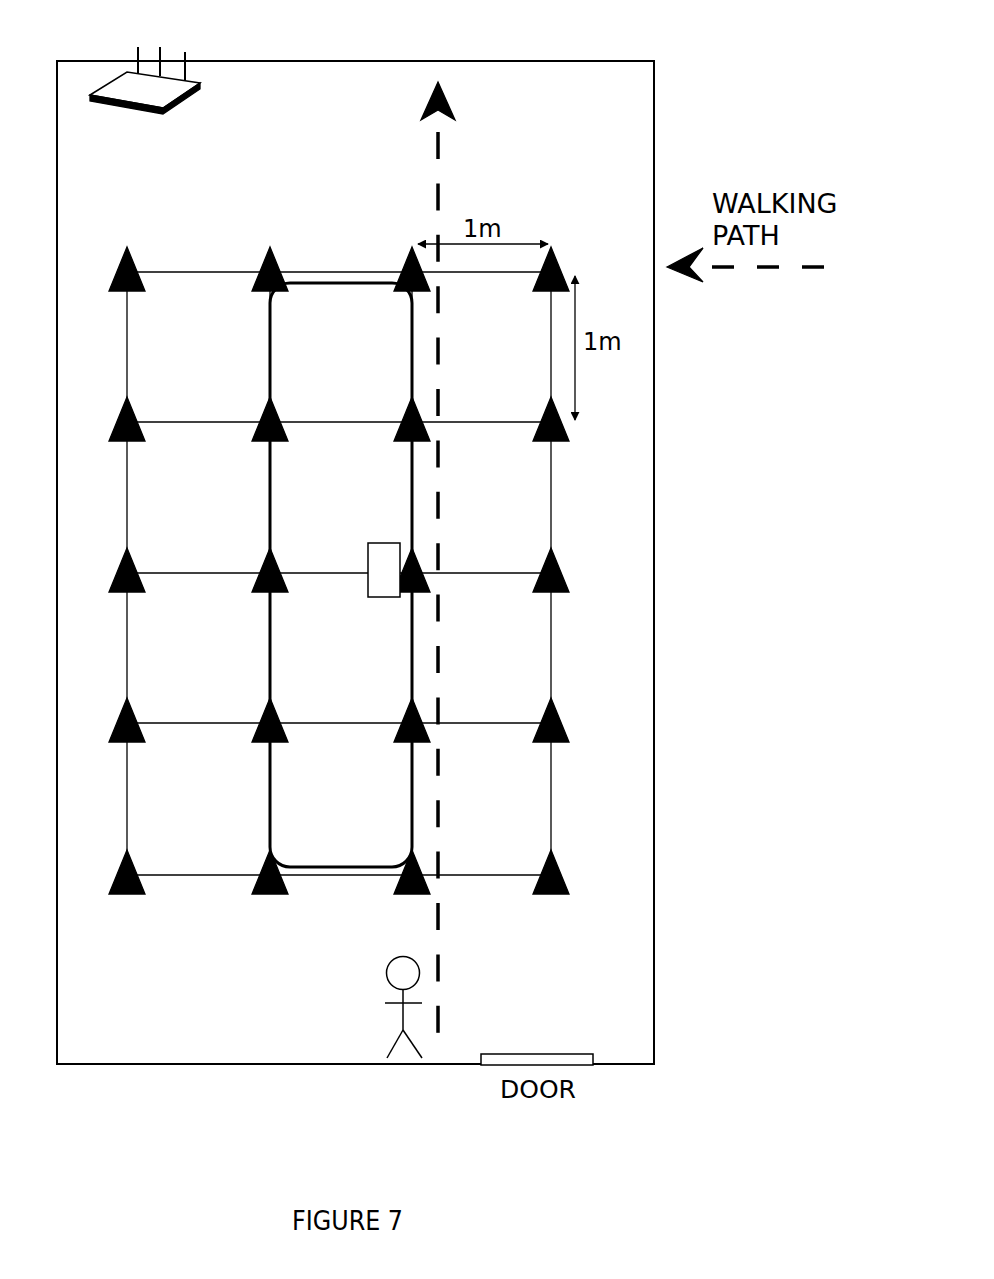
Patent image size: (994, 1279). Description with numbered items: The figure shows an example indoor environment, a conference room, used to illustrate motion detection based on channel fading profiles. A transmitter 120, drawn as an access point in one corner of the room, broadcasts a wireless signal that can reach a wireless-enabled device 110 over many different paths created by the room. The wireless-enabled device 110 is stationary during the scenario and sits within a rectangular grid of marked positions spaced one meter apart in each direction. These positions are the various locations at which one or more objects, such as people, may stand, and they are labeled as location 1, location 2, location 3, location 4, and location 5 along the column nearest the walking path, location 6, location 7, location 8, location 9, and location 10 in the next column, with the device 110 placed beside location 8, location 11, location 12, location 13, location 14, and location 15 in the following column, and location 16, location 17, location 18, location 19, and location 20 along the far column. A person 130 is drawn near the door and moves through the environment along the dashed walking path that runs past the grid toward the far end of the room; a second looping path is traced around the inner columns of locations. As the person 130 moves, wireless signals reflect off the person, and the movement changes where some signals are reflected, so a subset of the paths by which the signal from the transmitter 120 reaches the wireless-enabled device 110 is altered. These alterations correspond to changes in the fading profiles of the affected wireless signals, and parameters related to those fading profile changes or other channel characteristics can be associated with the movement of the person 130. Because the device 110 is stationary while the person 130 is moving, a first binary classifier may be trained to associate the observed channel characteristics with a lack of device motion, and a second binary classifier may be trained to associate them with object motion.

The wireless-enabled device 110 is at (389, 583).
The transmitter 120 is at (179, 72).
The person 130 is at (384, 1011).
The location 1 is at (544, 291).
The location 2 is at (544, 441).
The location 3 is at (544, 592).
The location 4 is at (544, 742).
The location 5 is at (544, 894).
The location 6 is at (405, 291).
The location 7 is at (405, 441).
The location 8 is at (405, 592).
The location 9 is at (405, 742).
The location 10 is at (395, 894).
The location 11 is at (253, 291).
The location 12 is at (253, 441).
The location 13 is at (253, 592).
The location 14 is at (253, 742).
The location 15 is at (253, 894).
The location 16 is at (110, 291).
The location 17 is at (110, 441).
The location 18 is at (110, 592).
The location 19 is at (110, 742).
The location 20 is at (110, 894).